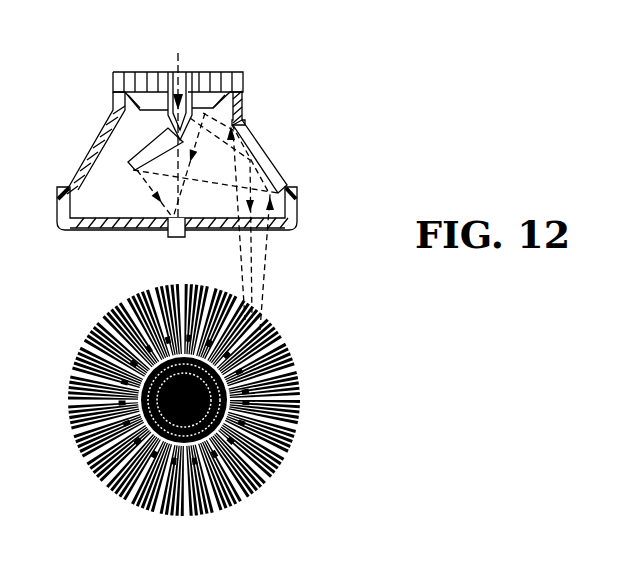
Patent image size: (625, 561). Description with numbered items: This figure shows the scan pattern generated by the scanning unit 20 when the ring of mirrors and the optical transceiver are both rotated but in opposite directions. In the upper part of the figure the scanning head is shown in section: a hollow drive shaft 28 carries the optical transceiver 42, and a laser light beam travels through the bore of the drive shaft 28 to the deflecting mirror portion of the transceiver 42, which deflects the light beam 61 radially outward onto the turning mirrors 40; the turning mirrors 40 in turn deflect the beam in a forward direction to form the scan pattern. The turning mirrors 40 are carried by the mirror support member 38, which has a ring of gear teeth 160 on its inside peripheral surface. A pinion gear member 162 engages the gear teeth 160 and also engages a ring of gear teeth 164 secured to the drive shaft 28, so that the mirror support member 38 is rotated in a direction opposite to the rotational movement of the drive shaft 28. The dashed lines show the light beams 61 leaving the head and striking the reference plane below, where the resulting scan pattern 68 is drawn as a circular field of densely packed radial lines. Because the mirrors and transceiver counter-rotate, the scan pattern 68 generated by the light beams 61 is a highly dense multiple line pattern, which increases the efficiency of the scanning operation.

The scanning unit 20 is at (292, 158).
The hollow drive shaft 28 is at (163, 110).
The mirror support member 38 is at (243, 86).
The turning mirrors 40 is at (255, 142).
The optical transceiver 42 is at (133, 148).
The light beam 61 is at (270, 266).
The scan pattern 68 is at (285, 392).
The ring of gear teeth 160 is at (232, 73).
The pinion gear member 162 is at (142, 72).
The ring of gear teeth 164 is at (190, 60).